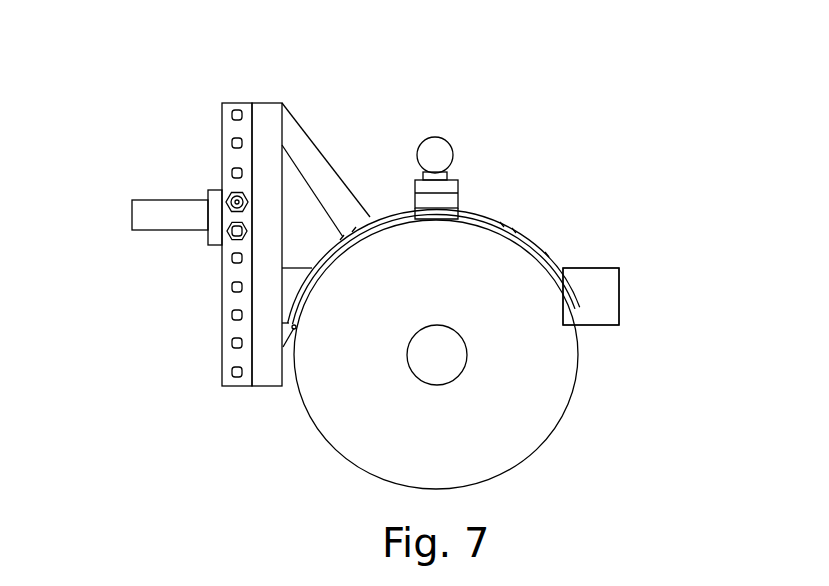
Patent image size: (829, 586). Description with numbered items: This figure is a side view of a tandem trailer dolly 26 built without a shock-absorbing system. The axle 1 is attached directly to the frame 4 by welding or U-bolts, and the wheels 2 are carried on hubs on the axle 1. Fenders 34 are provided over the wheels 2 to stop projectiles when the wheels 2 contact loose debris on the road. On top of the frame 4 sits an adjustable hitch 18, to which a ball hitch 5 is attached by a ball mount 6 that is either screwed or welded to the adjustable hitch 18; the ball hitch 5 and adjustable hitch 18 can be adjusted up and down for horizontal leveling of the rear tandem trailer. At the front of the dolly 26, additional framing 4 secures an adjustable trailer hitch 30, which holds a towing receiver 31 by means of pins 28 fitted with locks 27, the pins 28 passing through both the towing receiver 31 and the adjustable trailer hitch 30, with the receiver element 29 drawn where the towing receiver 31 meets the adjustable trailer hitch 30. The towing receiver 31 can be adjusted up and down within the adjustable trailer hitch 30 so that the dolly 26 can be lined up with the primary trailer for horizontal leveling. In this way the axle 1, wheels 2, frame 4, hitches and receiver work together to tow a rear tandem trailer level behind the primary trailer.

The axle 1 is at (438, 354).
The wheels 2 is at (541, 452).
The frame 4 is at (313, 139).
The ball hitch 5 is at (461, 147).
The ball mount 6 is at (412, 177).
The adjustable hitch 18 is at (463, 199).
The tandem trailer dolly 26 is at (680, 291).
The locks 27 is at (238, 241).
The pins 28 is at (235, 199).
The bracket flange 29 is at (210, 187).
The adjustable trailer hitch 30 is at (220, 101).
The towing receiver 31 is at (128, 234).
The fenders 34 is at (588, 304).